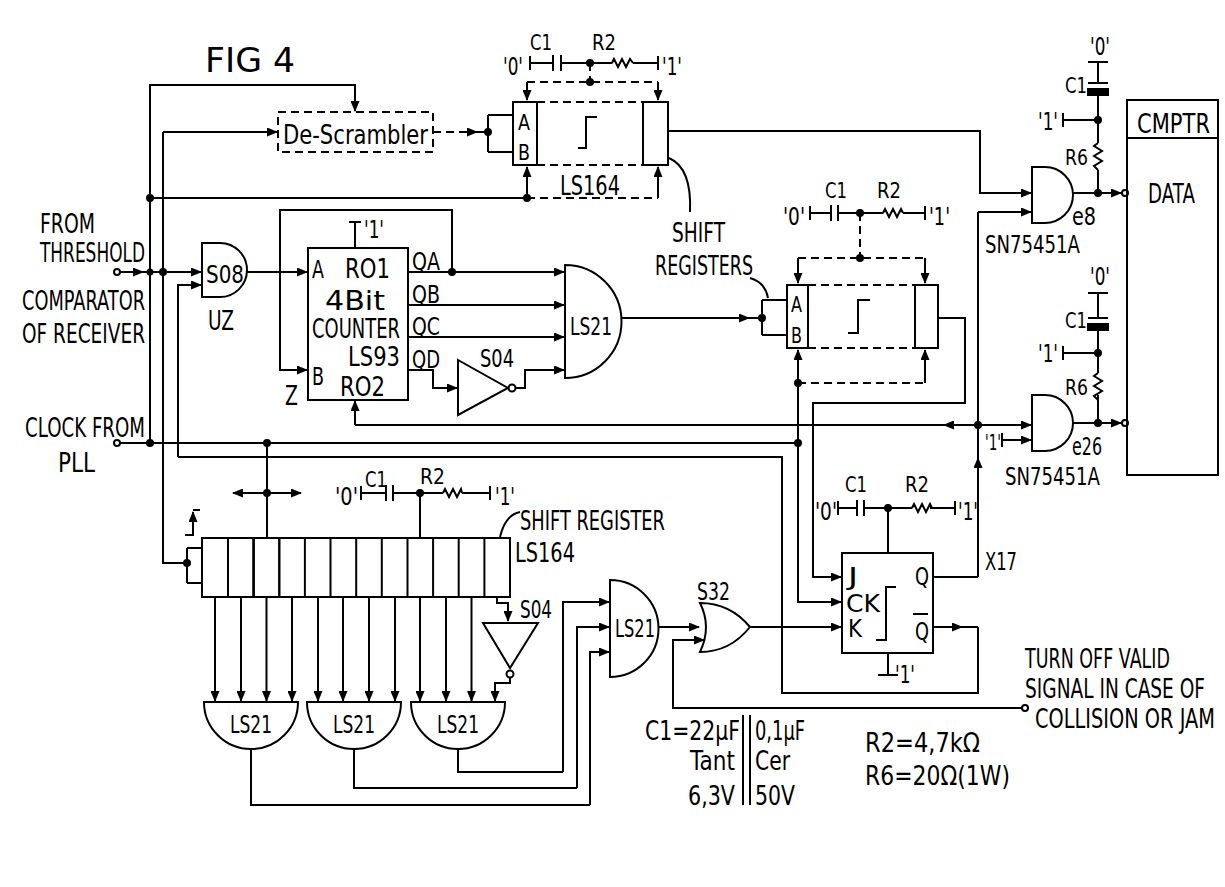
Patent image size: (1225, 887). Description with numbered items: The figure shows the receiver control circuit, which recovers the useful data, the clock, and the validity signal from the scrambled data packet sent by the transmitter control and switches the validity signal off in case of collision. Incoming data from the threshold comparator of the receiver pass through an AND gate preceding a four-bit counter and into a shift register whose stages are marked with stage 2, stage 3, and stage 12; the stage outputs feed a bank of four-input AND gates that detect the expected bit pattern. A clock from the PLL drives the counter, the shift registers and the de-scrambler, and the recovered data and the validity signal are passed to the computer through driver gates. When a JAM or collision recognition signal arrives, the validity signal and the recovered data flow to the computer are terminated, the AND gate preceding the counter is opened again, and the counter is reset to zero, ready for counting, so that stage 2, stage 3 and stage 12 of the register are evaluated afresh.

The shift register stage 2 is at (241, 567).
The shift register stage 3 is at (267, 567).
The shift register stage 12 is at (356, 568).